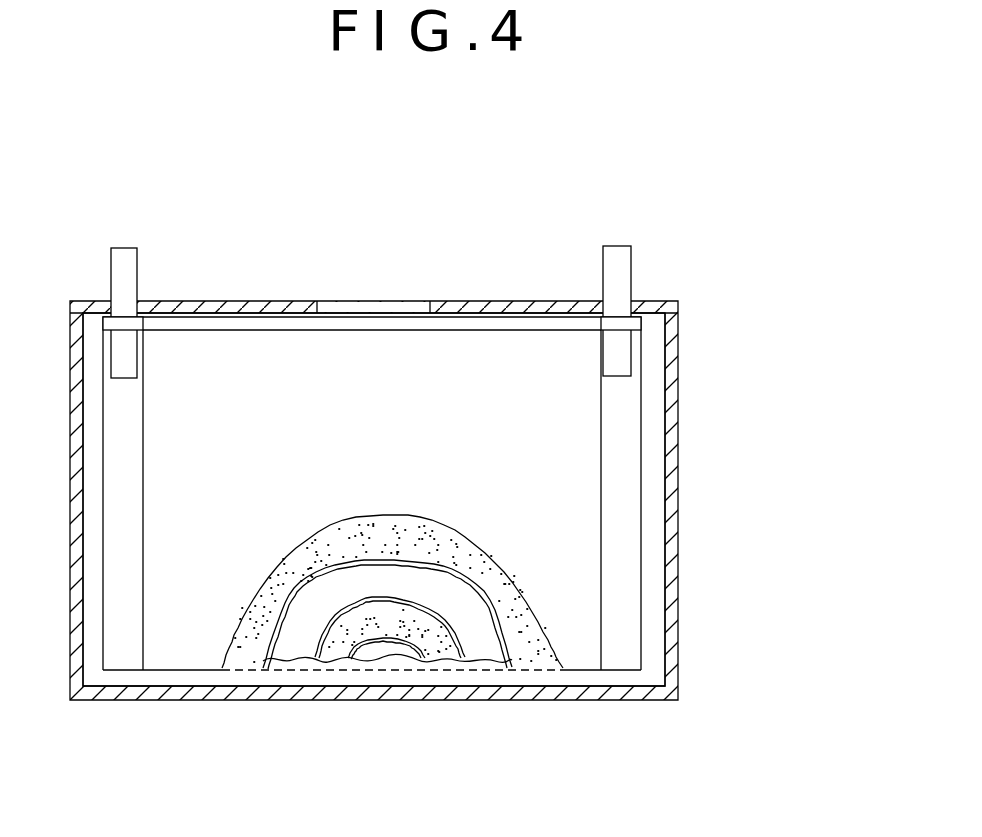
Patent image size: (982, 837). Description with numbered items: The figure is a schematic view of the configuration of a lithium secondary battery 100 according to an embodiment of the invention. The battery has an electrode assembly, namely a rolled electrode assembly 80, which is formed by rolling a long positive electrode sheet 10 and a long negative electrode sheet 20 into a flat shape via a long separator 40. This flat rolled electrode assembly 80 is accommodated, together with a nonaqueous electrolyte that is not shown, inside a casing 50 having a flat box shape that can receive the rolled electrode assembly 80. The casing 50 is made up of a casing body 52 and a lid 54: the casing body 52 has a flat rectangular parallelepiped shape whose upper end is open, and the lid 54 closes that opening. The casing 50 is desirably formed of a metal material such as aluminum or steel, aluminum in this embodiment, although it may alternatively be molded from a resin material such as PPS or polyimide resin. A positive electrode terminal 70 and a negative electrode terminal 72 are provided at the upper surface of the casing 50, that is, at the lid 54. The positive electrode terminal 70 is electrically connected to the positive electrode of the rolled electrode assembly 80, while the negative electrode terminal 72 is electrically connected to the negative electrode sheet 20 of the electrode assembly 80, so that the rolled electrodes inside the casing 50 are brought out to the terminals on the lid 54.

The lithium secondary battery 100 is at (436, 452).
The positive electrode sheet 10 is at (180, 645).
The negative electrode sheet 20 is at (293, 657).
The separator 40 is at (247, 660).
The casing 50 is at (420, 466).
The casing body 52 is at (678, 430).
The lid 54 is at (228, 310).
The positive electrode terminal 70 is at (124, 262).
The negative electrode terminal 72 is at (614, 257).
The rolled electrode assembly 80 is at (372, 506).